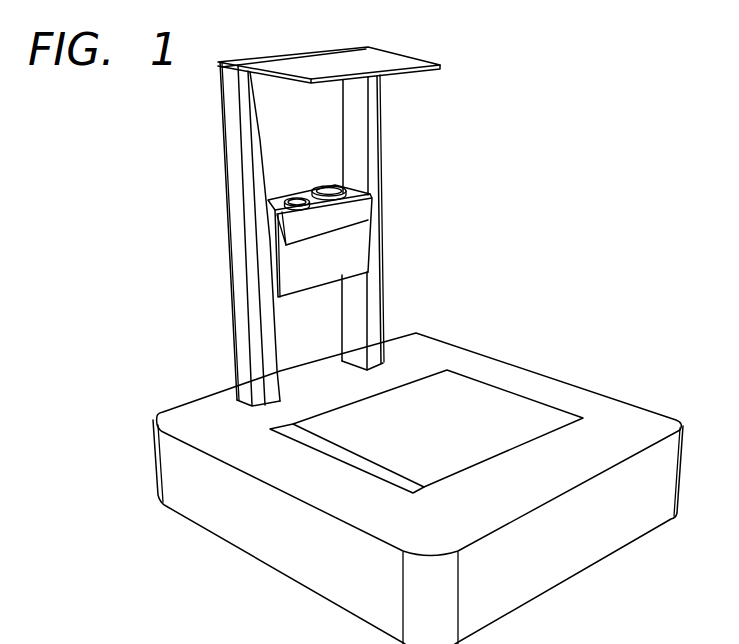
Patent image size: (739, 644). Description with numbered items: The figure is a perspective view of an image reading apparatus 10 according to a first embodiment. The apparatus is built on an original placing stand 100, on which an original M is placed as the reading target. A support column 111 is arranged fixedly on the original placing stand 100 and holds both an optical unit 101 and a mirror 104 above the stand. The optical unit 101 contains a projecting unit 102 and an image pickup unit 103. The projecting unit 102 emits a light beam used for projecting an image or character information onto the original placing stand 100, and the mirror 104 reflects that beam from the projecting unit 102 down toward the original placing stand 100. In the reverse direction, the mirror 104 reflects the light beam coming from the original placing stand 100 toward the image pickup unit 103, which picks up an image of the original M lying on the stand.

The image reading apparatus 10 is at (553, 162).
The original placing stand 100 is at (462, 358).
The original M is at (498, 401).
The support column 111 is at (240, 270).
The mirror 104 is at (380, 59).
The optical unit 101 is at (347, 253).
The projecting unit 102 is at (337, 188).
The image pickup unit 103 is at (293, 193).